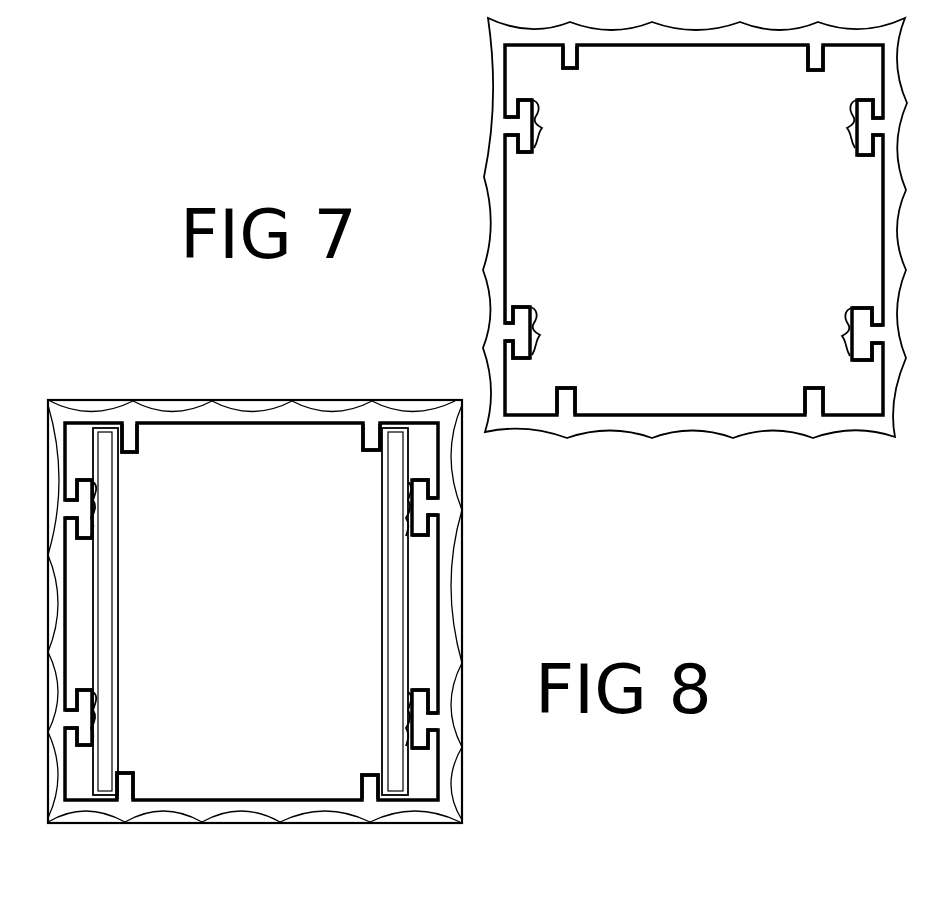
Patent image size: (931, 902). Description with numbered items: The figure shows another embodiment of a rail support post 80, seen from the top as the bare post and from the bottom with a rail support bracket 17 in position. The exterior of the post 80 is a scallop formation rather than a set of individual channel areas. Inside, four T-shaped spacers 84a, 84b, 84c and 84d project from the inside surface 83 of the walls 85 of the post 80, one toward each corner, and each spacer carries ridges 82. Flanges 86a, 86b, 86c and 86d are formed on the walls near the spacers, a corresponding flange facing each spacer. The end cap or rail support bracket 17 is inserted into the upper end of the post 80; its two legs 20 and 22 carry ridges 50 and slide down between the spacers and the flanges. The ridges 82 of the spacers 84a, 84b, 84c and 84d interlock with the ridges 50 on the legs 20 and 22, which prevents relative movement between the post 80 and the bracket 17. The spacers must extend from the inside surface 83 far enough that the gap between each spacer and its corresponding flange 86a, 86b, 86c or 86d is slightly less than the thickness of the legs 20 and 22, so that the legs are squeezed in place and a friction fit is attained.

In FIG. 7, the rail support post 80 is at (478, 179).
In FIG. 8, the rail support post 80 is at (267, 828).
In FIG. 7, the ridges 82 is at (550, 150).
In FIG. 8, the ridges 82 is at (406, 488).
In FIG. 7, the T-shaped spacer 84a is at (866, 154).
In FIG. 8, the T-shaped spacer 84a is at (432, 526).
In FIG. 7, the T-shaped spacer 84b is at (874, 305).
In FIG. 8, the T-shaped spacer 84b is at (410, 736).
In FIG. 7, the T-shaped spacer 84c is at (530, 310).
In FIG. 8, the T-shaped spacer 84c is at (86, 742).
In FIG. 7, the T-shaped spacer 84d is at (540, 100).
In FIG. 8, the T-shaped spacer 84d is at (86, 536).
In FIG. 7, the flange 86a is at (808, 393).
In FIG. 8, the flange 86a is at (372, 438).
In FIG. 7, the flange 86b is at (575, 384).
In FIG. 8, the flange 86b is at (366, 784).
In FIG. 7, the flange 86c is at (582, 60).
In FIG. 8, the flange 86c is at (141, 786).
In FIG. 7, the flange 86d is at (810, 60).
In FIG. 8, the flange 86d is at (136, 446).
In FIG. 8, the rail support bracket 17 is at (240, 407).
In FIG. 8, the leg 20 is at (396, 556).
In FIG. 8, the leg 22 is at (113, 554).
In FIG. 8, the ridges 50 is at (95, 591).
In FIG. 8, the inside surface 83 is at (438, 781).
In FIG. 8, the walls 85 is at (454, 756).